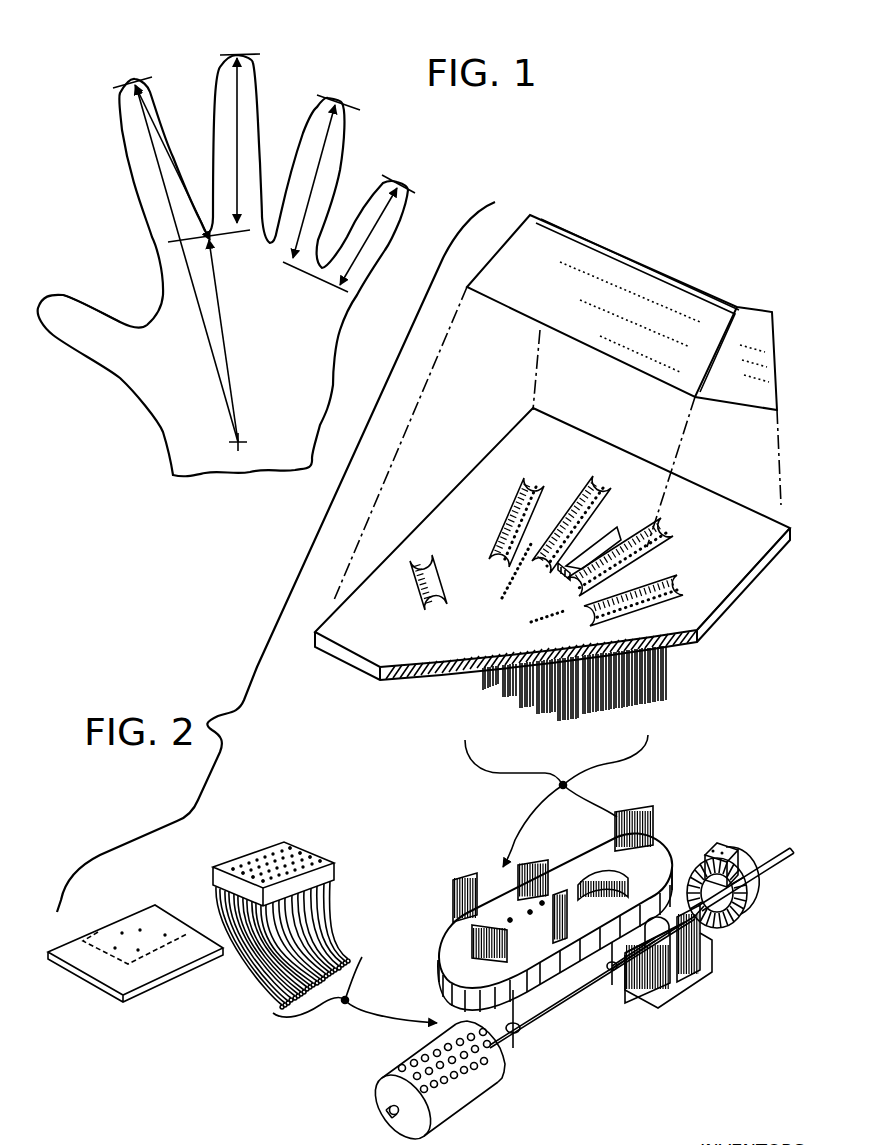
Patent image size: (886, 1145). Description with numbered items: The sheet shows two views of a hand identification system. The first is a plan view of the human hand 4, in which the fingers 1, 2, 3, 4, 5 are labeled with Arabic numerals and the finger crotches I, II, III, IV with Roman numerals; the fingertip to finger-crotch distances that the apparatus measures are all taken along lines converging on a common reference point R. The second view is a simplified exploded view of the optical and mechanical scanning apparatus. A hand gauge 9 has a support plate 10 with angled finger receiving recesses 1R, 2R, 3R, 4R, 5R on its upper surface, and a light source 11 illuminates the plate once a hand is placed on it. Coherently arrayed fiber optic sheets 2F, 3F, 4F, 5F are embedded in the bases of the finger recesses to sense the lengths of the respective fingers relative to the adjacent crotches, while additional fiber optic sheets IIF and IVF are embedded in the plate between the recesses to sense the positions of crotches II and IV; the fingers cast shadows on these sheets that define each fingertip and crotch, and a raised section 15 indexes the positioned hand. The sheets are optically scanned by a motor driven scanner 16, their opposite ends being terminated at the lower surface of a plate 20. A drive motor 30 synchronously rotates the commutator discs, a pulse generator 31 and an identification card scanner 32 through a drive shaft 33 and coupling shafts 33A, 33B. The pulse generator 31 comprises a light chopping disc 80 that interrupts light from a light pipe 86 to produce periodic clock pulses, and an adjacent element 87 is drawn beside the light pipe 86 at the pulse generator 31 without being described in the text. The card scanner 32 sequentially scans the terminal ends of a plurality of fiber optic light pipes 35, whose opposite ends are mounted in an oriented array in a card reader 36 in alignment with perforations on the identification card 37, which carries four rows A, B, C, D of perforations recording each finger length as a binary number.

In FIG. 1, the finger 1 is at (72, 300).
In FIG. 1, the finger 2 is at (181, 151).
In FIG. 1, the finger 3 is at (240, 127).
In FIG. 1, the human hand 4 is at (117, 417).
In FIG. 1, the finger 5 is at (377, 223).
In FIG. 1, the finger crotch I is at (127, 287).
In FIG. 1, the finger crotch II is at (183, 106).
In FIG. 1, the finger crotch III is at (286, 106).
In FIG. 1, the finger crotch IV is at (354, 184).
In FIG. 1, the row of perforations / light pipes A is at (187, 264).
In FIG. 2, the row of perforations / light pipes A is at (312, 861).
In FIG. 1, the row of perforations / light pipes B is at (223, 341).
In FIG. 2, the row of perforations / light pipes B is at (300, 855).
In FIG. 2, the row of perforations / light pipes C is at (288, 851).
In FIG. 2, the row of perforations / light pipes D is at (276, 847).
In FIG. 1, the common reference point R is at (235, 441).
In FIG. 2, the hand gauge 9 is at (769, 625).
In FIG. 2, the support plate 10 is at (757, 537).
In FIG. 2, the light source 11 is at (737, 388).
In FIG. 2, the raised section 15 is at (600, 548).
In FIG. 2, the motor driven scanner 16 is at (698, 845).
In FIG. 2, the plate 20 is at (580, 853).
In FIG. 2, the drive motor 30 is at (705, 960).
In FIG. 2, the pulse generator 31 is at (806, 891).
In FIG. 2, the identification card scanner 32 is at (497, 1086).
In FIG. 2, the drive shaft 33 is at (545, 1013).
In FIG. 2, the coupling shaft 33A is at (508, 1023).
In FIG. 2, the coupling shaft 33B is at (608, 977).
In FIG. 2, the fiber optic light pipes 35 is at (378, 929).
In FIG. 2, the card reader 36 is at (328, 875).
In FIG. 2, the identification card 37 is at (110, 937).
In FIG. 2, the light chopping disc 80 is at (747, 920).
In FIG. 2, the light pipe 86 is at (733, 860).
In FIG. 2, the drive shaft 87 is at (748, 860).
In FIG. 2, the finger receiving recess 1R is at (424, 556).
In FIG. 2, the finger receiving recess 2R is at (536, 472).
In FIG. 2, the finger receiving recess 3R is at (612, 477).
In FIG. 2, the finger receiving recess 4R is at (678, 522).
In FIG. 2, the finger receiving recess 5R is at (692, 582).
In FIG. 2, the fiber optic sheet 2F is at (522, 500).
In FIG. 2, the fiber optic sheet 3F is at (593, 507).
In FIG. 2, the fiber optic sheet 4F is at (652, 543).
In FIG. 2, the fiber optic sheet 5F is at (653, 605).
In FIG. 2, the fiber optic sheet IIF is at (500, 598).
In FIG. 2, the fiber optic sheet IVF is at (531, 623).